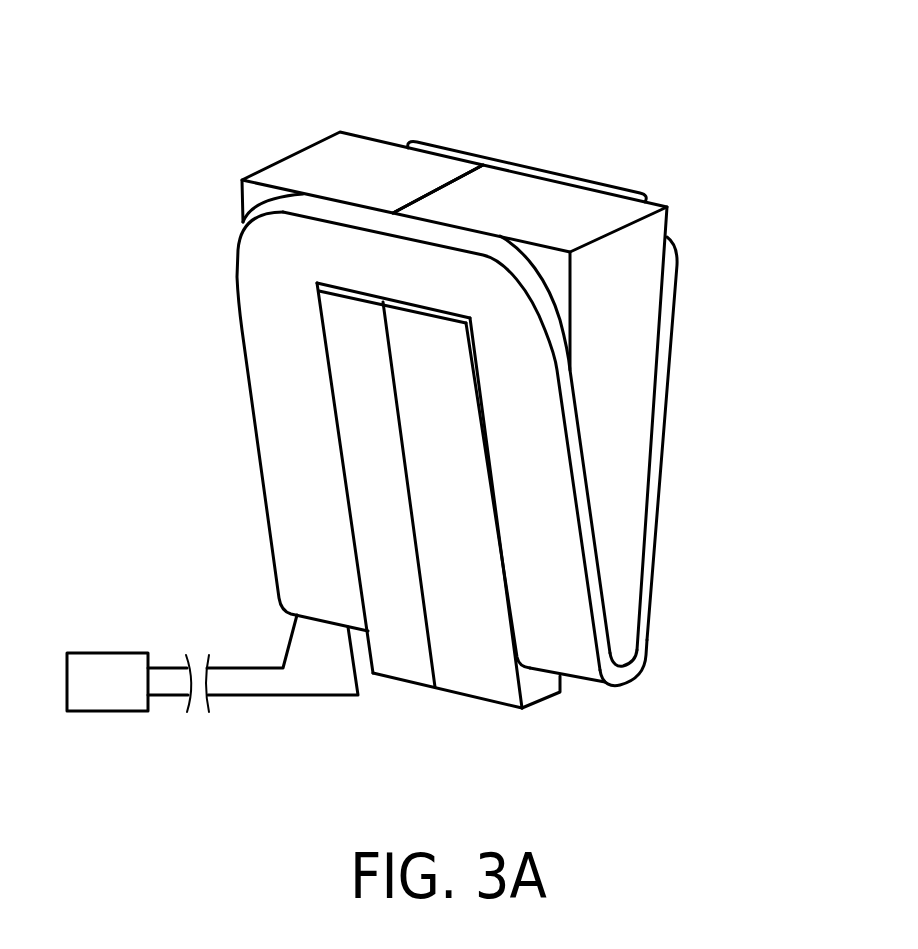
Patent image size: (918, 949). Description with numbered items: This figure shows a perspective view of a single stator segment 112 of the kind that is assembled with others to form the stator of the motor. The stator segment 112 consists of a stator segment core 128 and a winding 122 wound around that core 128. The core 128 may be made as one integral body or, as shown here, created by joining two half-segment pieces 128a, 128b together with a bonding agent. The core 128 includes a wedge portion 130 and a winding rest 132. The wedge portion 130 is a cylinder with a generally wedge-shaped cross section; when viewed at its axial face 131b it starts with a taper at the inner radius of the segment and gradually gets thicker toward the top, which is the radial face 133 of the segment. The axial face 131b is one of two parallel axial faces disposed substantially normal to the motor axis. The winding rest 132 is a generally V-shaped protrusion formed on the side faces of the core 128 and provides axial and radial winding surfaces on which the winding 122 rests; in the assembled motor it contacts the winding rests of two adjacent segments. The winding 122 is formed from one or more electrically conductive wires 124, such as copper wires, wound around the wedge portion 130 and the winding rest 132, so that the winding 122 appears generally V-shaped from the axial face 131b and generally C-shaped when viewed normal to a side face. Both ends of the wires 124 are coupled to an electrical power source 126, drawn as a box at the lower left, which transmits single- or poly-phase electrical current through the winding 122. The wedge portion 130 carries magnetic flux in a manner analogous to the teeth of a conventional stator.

The stator segment 112 is at (107, 222).
The winding 122 is at (303, 483).
The electrically conductive wires 124 is at (290, 642).
The electrical power source 126 is at (128, 700).
The stator segment core 128 is at (265, 150).
The half-segment piece 128a is at (315, 135).
The half-segment piece 128b is at (635, 217).
The wedge portion 130 is at (630, 272).
The axial face 131b is at (641, 443).
The winding rest 132 is at (542, 687).
The radial face 133 is at (545, 190).